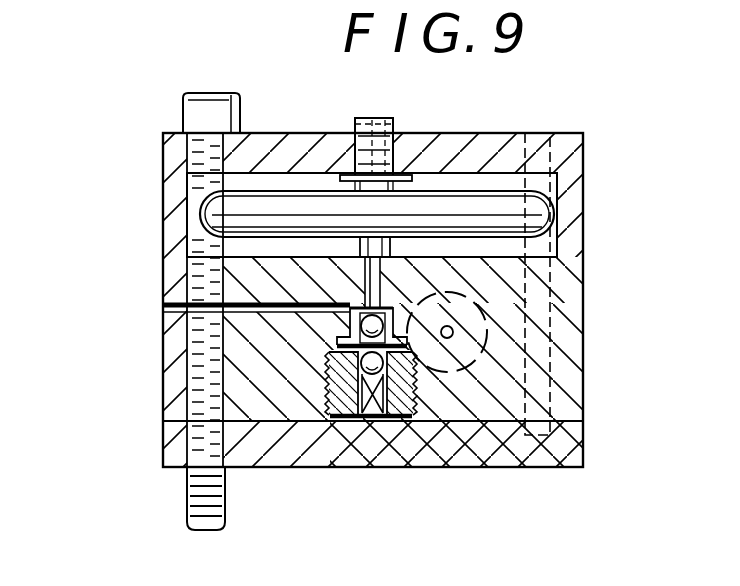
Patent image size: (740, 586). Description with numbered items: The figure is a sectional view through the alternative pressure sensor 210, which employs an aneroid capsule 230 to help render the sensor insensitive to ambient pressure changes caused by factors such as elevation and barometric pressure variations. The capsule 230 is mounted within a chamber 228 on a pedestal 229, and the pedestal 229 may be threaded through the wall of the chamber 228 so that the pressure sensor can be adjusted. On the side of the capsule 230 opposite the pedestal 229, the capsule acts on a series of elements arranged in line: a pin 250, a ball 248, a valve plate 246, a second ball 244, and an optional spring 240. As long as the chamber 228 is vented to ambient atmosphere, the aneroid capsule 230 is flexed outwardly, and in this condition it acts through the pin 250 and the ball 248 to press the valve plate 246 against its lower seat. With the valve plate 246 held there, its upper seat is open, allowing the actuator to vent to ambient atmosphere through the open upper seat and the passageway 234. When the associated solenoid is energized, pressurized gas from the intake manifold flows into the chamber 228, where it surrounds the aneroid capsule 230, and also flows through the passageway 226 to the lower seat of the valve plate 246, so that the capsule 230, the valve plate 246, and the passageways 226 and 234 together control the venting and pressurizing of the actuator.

The pressure sensor 210 is at (81, 165).
The passageway 226 is at (440, 435).
The chamber 228 is at (286, 176).
The pedestal 229 is at (373, 124).
The aneroid capsule 230 is at (546, 209).
The passageway 234 is at (163, 305).
The spring 240 is at (360, 366).
The ball 244 is at (397, 356).
The valve plate 246 is at (333, 355).
The ball 248 is at (350, 303).
The pin 250 is at (394, 308).